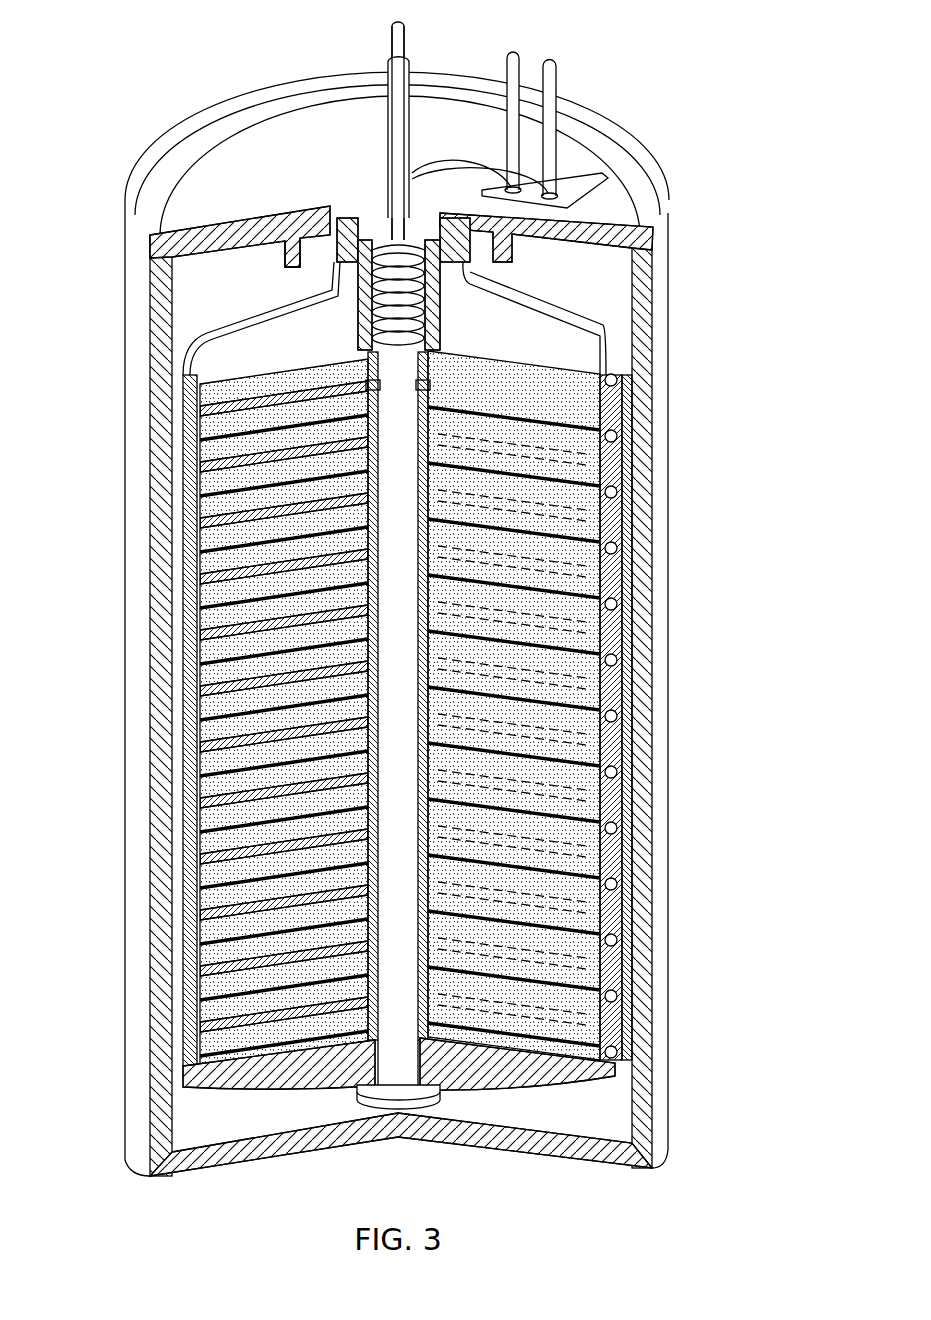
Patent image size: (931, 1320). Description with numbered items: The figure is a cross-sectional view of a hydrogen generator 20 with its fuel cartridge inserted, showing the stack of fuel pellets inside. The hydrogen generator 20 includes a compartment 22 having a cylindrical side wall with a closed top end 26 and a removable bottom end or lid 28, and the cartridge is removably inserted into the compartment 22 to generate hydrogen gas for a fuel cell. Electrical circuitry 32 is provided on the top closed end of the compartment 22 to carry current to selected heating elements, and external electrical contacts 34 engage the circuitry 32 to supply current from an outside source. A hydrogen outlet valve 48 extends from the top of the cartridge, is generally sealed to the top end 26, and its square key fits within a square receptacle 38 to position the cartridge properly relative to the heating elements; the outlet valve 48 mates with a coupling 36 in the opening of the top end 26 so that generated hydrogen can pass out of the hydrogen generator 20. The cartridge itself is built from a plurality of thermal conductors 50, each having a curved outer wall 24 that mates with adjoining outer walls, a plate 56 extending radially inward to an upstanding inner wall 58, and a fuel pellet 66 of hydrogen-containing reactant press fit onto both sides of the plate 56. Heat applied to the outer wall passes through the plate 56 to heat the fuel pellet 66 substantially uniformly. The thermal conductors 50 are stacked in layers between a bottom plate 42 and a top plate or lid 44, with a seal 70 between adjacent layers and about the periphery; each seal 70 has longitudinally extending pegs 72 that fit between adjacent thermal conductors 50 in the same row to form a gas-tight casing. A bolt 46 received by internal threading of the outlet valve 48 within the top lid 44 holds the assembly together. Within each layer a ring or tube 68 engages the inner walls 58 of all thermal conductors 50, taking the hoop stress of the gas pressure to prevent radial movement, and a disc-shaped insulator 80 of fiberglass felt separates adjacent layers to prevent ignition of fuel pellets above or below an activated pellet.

The hydrogen generator 20 is at (690, 68).
The compartment 22 is at (112, 626).
The cylindrical side wall 24 is at (137, 1018).
The closed top end 26 is at (240, 135).
The removable bottom end or lid 28 is at (618, 1163).
The electrical circuitry 32 is at (592, 170).
The external electrical contacts 34 is at (552, 66).
The coupling 36 is at (406, 60).
The square receptacle 38 is at (288, 250).
The bottom plate 42 is at (297, 1087).
The top plate (top lid) 44 is at (590, 293).
The bolt 46 is at (398, 1062).
The hydrogen outlet valve 48 is at (380, 213).
The thermal conductor 50 is at (625, 575).
The plate 56 is at (228, 398).
The upstanding inner wall 58 is at (377, 582).
The fuel pellet 66 is at (318, 427).
The ring or tube 68 is at (372, 440).
The seal 70 is at (633, 390).
The pegs 72 is at (195, 582).
The disc-shaped insulator 80 is at (222, 370).